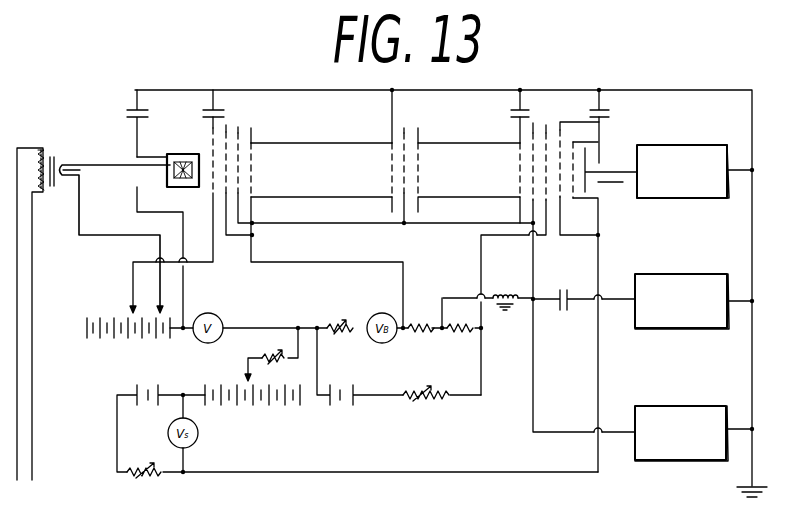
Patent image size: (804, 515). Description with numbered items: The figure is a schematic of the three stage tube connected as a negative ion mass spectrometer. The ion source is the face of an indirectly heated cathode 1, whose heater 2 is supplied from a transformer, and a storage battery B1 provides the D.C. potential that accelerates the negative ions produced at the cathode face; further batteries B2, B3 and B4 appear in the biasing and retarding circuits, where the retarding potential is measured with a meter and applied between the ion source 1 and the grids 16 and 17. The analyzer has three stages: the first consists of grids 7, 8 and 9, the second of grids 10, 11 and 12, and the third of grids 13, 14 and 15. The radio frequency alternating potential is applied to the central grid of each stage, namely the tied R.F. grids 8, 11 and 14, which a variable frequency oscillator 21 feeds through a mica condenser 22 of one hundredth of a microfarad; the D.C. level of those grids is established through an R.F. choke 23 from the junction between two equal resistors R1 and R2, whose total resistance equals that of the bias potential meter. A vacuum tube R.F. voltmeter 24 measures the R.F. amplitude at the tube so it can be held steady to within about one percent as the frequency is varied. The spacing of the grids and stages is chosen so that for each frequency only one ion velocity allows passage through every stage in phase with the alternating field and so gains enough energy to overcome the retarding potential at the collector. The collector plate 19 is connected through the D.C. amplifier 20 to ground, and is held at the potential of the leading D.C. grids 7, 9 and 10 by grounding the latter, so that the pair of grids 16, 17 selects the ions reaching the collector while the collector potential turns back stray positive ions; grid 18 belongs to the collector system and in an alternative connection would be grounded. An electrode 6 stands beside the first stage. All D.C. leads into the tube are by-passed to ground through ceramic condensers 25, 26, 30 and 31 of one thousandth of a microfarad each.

The indirectly heated cathode 1 is at (172, 156).
The heater 2 is at (147, 170).
The electrode 6 is at (218, 123).
The grid 7 is at (231, 125).
The grid 8 is at (240, 130).
The grid 9 is at (253, 132).
The grid 10 is at (392, 115).
The grid 11 is at (407, 128).
The grid 12 is at (420, 130).
The grid 13 is at (517, 128).
The grid 14 is at (535, 122).
The grid 15 is at (548, 123).
The grid 16 is at (562, 120).
The grid 17 is at (576, 141).
The grid 18 is at (600, 160).
The collector plate 19 is at (587, 151).
The D.C. amplifier 20 is at (695, 147).
The variable frequency oscillator 21 is at (678, 276).
The mica condenser 22 is at (569, 293).
The R.F. choke 23 is at (498, 293).
The vacuum tube R.F. voltmeter 24 is at (672, 406).
The ceramic condenser 25 is at (145, 104).
The ceramic condenser 26 is at (217, 104).
The ceramic condenser 30 is at (528, 100).
The ceramic condenser 31 is at (605, 106).
The storage battery B1 is at (140, 316).
The battery B2 is at (241, 366).
The battery B3 is at (399, 366).
The battery B4 is at (357, 431).
The resistor R1 is at (427, 318).
The resistor R2 is at (461, 315).